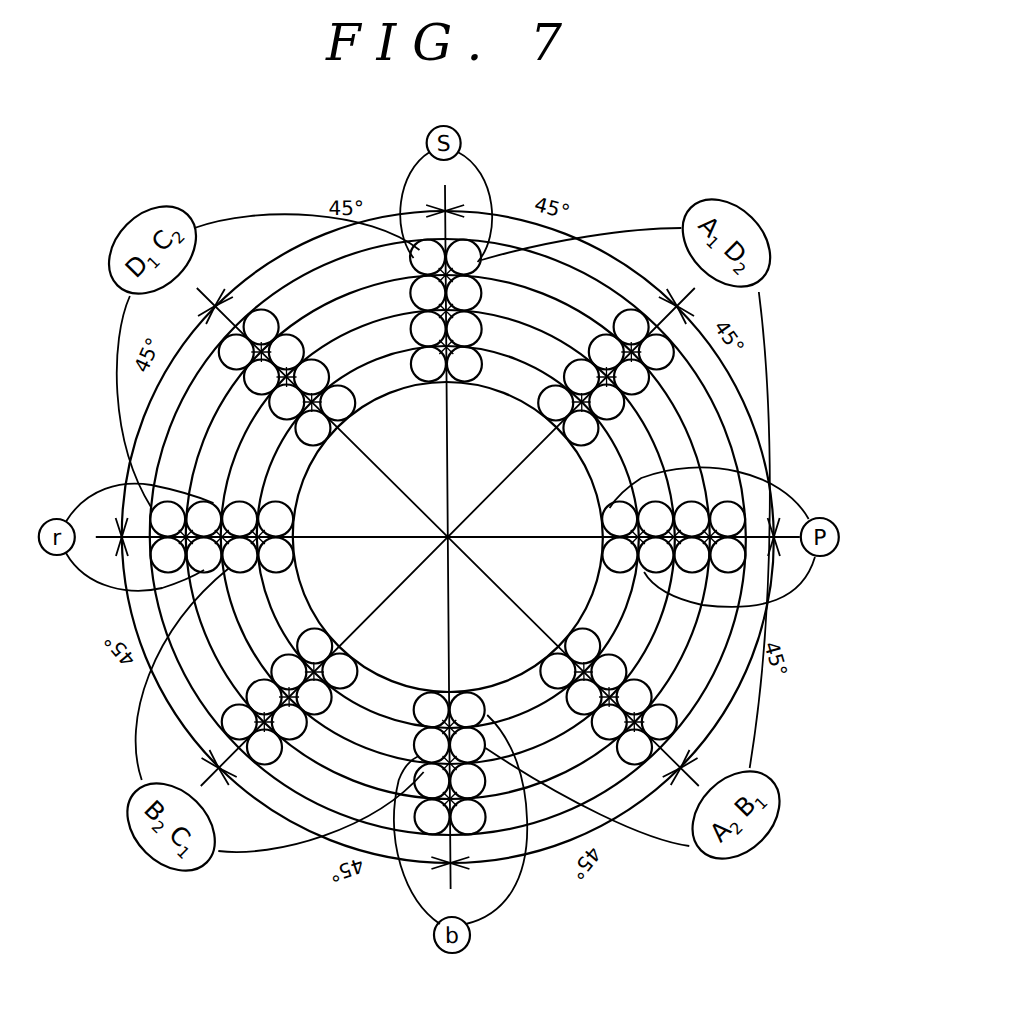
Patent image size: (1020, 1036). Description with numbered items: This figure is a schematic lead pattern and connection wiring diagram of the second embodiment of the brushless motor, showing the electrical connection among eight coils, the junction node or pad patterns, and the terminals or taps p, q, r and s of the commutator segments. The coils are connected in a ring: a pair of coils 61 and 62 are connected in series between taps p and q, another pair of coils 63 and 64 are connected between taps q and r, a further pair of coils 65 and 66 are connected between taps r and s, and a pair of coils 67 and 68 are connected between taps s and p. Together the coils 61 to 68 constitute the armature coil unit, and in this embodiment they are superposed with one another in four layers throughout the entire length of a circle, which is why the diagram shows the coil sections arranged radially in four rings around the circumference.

The coil 61 is at (292, 518).
The coil 62 is at (252, 505).
The coil 63 is at (481, 330).
The coil 64 is at (481, 295).
The coil 65 is at (213, 500).
The coil 66 is at (153, 509).
The coil 67 is at (481, 258).
The coil 68 is at (538, 405).